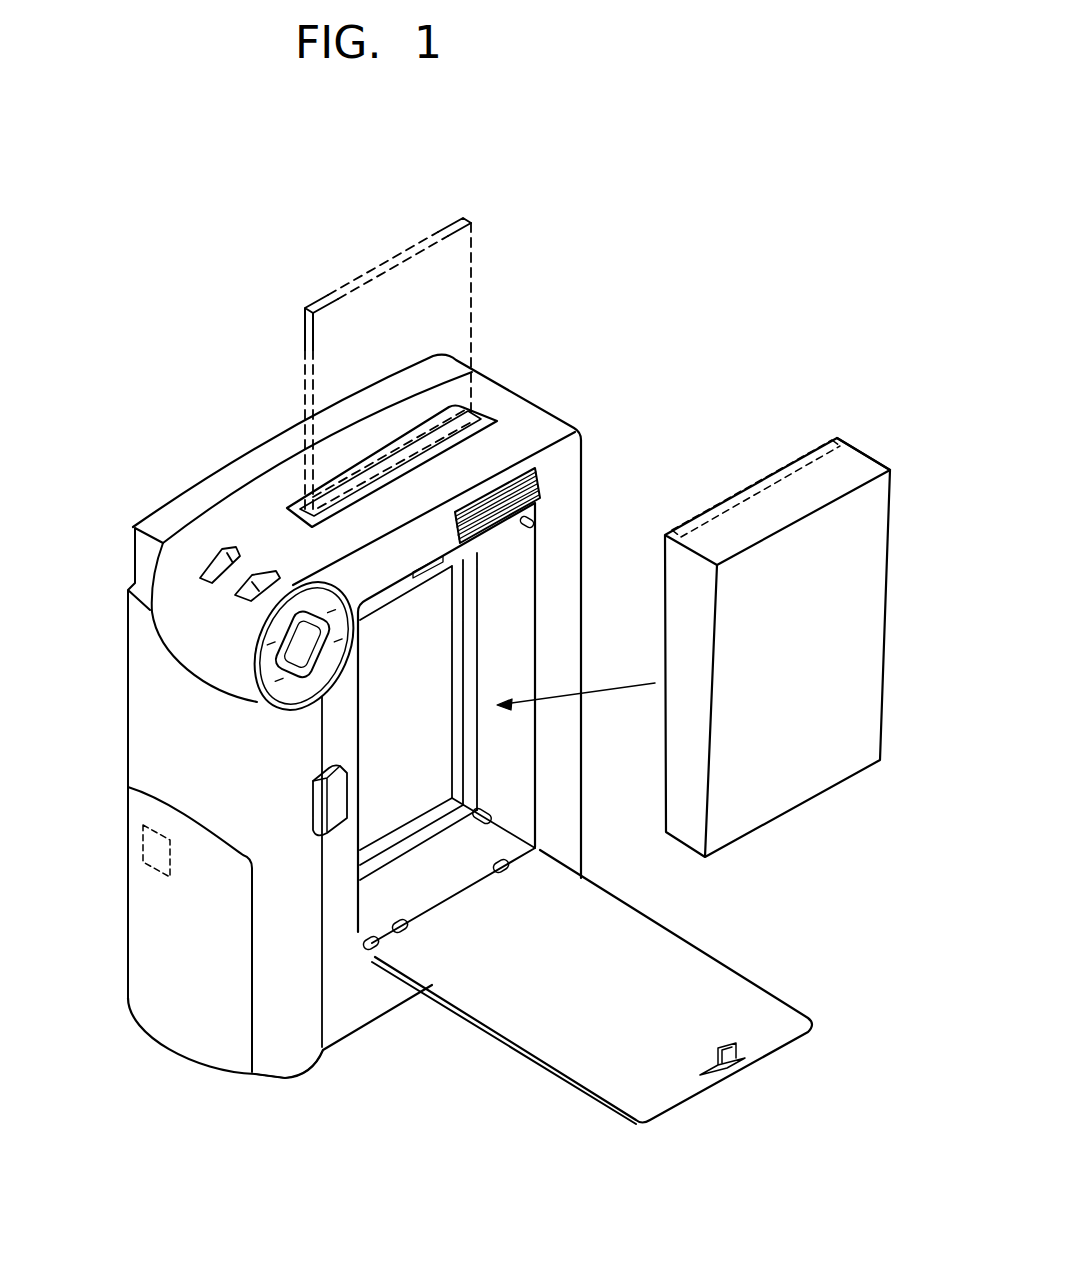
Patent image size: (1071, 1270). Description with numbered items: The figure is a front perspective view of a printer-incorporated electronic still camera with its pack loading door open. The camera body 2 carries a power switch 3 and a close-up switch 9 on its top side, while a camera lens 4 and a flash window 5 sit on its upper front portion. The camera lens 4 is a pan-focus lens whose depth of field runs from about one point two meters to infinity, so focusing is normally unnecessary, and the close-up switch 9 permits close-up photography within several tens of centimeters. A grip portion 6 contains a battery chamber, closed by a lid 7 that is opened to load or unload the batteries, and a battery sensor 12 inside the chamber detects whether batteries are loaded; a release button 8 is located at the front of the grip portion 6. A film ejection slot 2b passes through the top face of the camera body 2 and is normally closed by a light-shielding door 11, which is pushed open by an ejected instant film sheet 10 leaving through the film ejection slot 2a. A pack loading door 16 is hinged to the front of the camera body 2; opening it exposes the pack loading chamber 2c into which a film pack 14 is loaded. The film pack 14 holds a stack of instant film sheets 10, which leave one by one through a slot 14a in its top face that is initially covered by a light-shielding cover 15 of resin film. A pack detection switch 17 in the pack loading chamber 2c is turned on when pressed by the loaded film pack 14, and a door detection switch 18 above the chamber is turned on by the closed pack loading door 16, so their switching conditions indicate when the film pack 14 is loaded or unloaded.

The camera body 2 is at (379, 1022).
The film ejection slot 2a is at (240, 657).
The film ejection slot 2b is at (372, 478).
The pack loading chamber 2c is at (433, 868).
The power switch 3 is at (233, 547).
The camera lens 4 is at (290, 643).
The flash window 5 is at (537, 488).
The grip portion 6 is at (298, 1055).
The lid 7 is at (193, 1002).
The release button 8 is at (338, 808).
The close-up switch 9 is at (263, 573).
The instant film sheet 10 is at (377, 267).
The light-shielding door 11 is at (480, 413).
The battery sensor 12 is at (143, 845).
The film pack 14 is at (816, 798).
The slot 14a is at (780, 477).
The light-shielding cover 15 is at (850, 445).
The pack loading door 16 is at (560, 1080).
The pack detection switch 17 is at (495, 820).
The door detection switch 18 is at (537, 525).